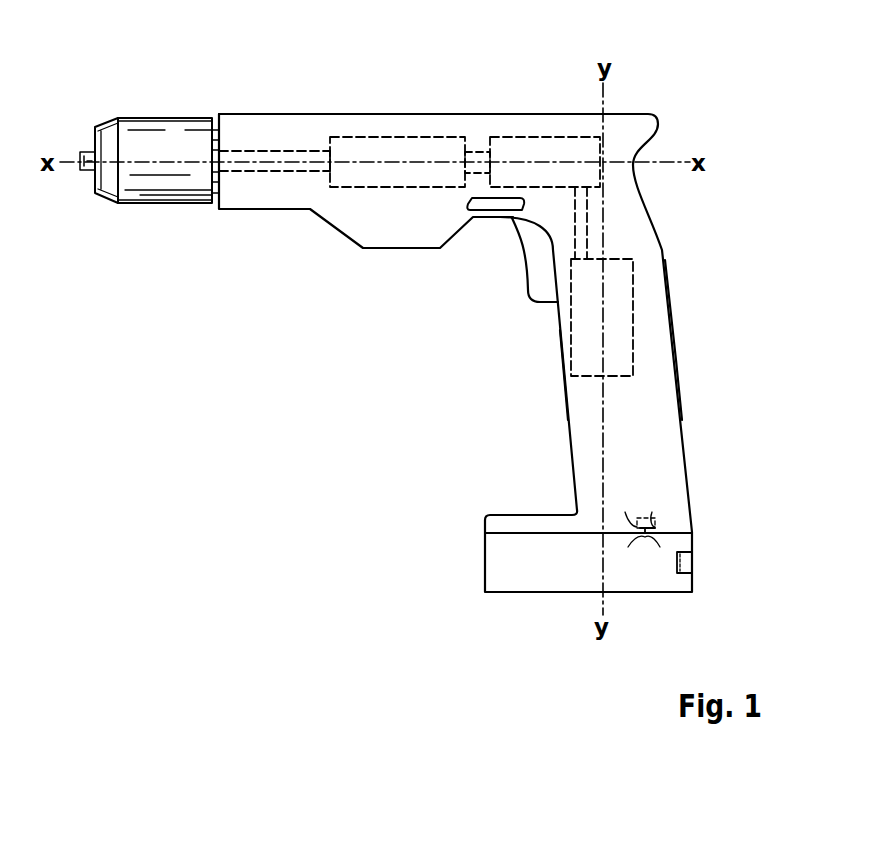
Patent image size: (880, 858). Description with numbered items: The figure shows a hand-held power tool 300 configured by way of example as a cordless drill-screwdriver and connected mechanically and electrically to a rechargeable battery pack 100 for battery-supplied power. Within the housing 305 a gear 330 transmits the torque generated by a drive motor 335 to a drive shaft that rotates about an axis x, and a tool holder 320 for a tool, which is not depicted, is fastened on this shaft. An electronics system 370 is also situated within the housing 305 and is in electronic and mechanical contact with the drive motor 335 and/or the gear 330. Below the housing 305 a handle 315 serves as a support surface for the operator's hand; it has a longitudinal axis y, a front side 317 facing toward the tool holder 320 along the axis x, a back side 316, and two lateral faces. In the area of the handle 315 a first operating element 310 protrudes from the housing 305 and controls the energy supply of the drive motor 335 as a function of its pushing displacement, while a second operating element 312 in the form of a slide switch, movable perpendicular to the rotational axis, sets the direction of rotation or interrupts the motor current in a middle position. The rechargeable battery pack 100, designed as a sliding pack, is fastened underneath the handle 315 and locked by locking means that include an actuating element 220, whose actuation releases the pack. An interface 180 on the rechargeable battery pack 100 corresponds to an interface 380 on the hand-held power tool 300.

The hand-held power tool 300 is at (405, 285).
The housing 305 is at (392, 132).
The first operating element 310 is at (538, 288).
The second operating element 312 is at (497, 207).
The handle 315 is at (650, 295).
The back side 316 is at (677, 358).
The front side 317 is at (565, 380).
The tool holder 320 is at (90, 157).
The gear 330 is at (340, 148).
The drive motor 335 is at (536, 150).
The electronics system 370 is at (623, 347).
The interface 380 is at (658, 520).
The rechargeable battery pack 100 is at (533, 575).
The interface 180 is at (657, 527).
The actuating element 220 is at (683, 578).